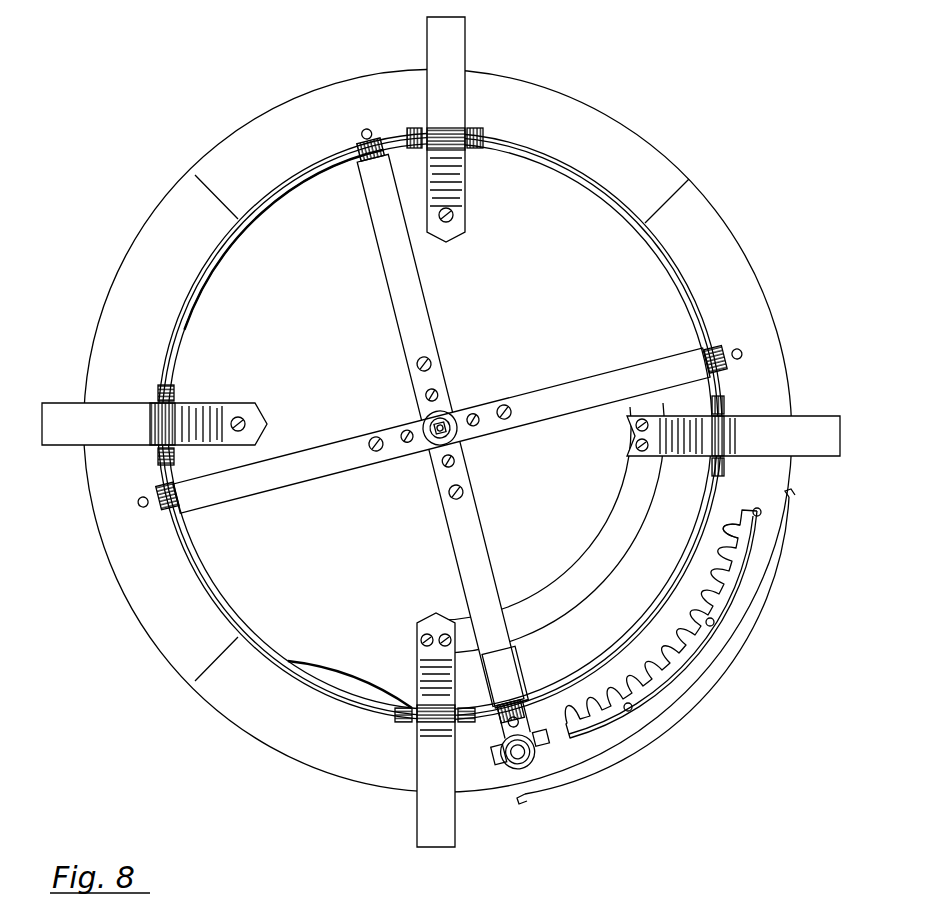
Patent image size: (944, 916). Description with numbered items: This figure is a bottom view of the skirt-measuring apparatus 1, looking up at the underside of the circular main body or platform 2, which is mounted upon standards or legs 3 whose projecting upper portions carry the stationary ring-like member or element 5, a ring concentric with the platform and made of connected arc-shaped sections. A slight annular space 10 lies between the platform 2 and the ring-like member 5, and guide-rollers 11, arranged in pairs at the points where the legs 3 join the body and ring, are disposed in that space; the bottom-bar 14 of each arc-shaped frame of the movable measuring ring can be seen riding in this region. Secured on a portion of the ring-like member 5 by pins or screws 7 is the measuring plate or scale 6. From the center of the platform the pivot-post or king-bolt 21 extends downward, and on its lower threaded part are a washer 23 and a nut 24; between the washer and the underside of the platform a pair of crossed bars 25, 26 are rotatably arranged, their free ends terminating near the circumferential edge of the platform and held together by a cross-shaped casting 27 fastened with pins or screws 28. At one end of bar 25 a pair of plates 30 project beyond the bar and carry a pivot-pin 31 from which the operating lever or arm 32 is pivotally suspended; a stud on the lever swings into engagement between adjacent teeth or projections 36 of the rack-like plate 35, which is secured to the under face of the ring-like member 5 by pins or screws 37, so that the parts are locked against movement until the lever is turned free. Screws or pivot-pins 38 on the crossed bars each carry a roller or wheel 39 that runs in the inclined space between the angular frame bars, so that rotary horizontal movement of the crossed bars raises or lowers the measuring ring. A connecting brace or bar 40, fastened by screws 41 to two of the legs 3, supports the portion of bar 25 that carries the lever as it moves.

The skirt-measuring apparatus 1 is at (454, 439).
The main body or platform 2 is at (440, 426).
The standards or legs 3 is at (460, 50).
The ring-like member or element 5 is at (190, 183).
The measuring plate or scale 6 is at (790, 518).
The pins or screws 7 is at (793, 498).
The annular space 10 is at (268, 198).
The guide-rollers 11 is at (422, 136).
The bottom-bar 14 is at (260, 212).
The pivot-post or king-bolt 21 is at (455, 438).
The washer 23 is at (448, 442).
The nut 24 is at (432, 436).
The crossed bar 25 is at (395, 283).
The crossed bar 26 is at (297, 488).
The cross-shaped casting 27 is at (500, 400).
The pins or screws 28 is at (418, 395).
The plates 30 is at (530, 660).
The pivot-pin 31 is at (590, 735).
The lever or arm 32 is at (518, 760).
The rack-like plate 35 is at (740, 585).
The teeth or projections 36 is at (603, 697).
The pins or screws 37 is at (760, 514).
The screws or pivot-pins 38 is at (368, 134).
The roller or wheel 39 is at (368, 160).
The connecting brace or bar 40 is at (607, 520).
The screws 41 is at (635, 440).